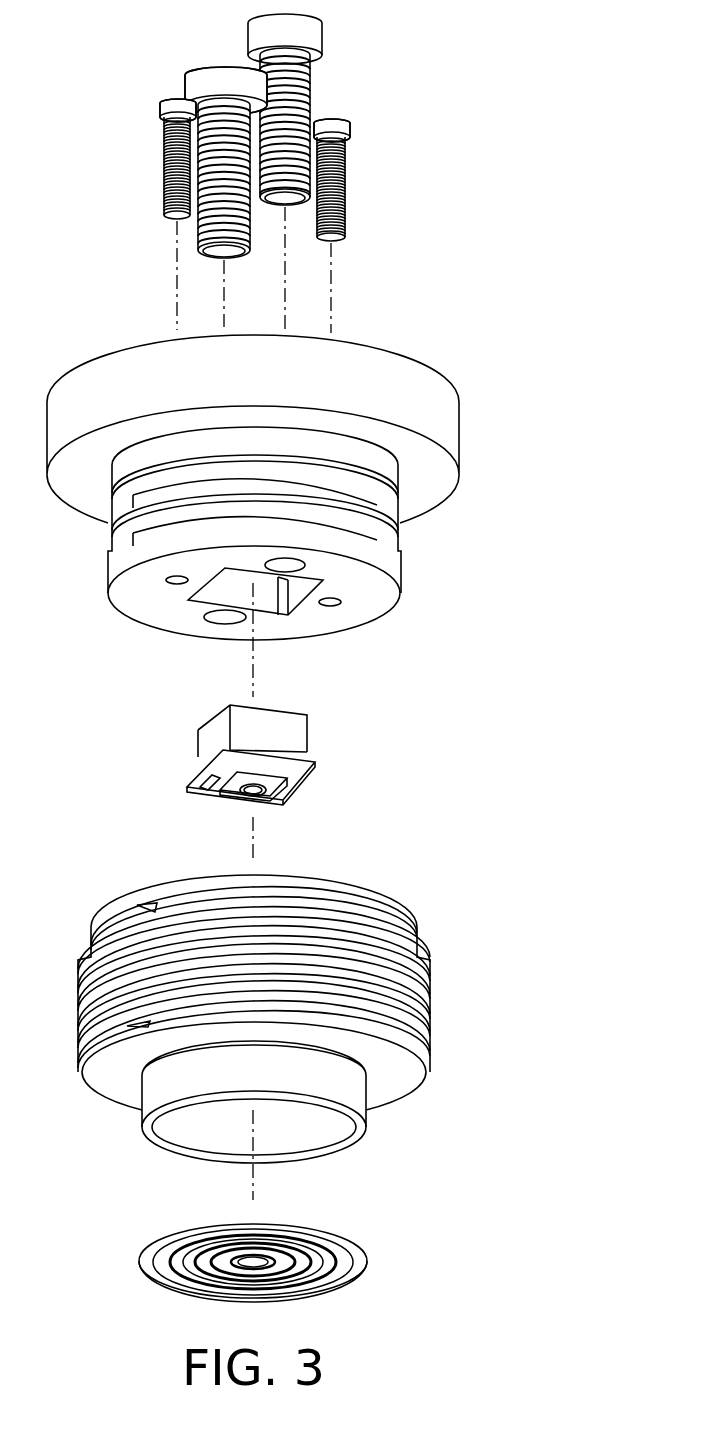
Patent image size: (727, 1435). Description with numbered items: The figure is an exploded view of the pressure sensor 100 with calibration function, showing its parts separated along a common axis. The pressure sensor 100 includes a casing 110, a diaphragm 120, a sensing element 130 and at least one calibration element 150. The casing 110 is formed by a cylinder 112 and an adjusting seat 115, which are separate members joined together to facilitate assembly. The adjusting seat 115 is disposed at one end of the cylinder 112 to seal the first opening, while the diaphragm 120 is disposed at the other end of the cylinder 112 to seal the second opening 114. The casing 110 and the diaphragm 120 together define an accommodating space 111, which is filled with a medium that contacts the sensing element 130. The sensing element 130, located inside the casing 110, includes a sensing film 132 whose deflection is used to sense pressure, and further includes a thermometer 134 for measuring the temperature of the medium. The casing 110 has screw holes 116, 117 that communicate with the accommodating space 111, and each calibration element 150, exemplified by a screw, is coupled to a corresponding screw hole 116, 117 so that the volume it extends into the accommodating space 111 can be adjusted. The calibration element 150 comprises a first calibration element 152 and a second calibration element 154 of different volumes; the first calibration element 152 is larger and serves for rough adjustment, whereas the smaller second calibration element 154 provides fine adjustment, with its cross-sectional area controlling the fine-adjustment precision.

The pressure sensor 100 is at (535, 1304).
The casing 110 is at (311, 516).
The accommodating space 111 is at (300, 1144).
The cylinder 112 is at (286, 1037).
The second opening 114 is at (316, 1128).
The adjusting seat 115 is at (453, 432).
The screw hole 116 is at (225, 618).
The screw hole 117 is at (330, 606).
The diaphragm 120 is at (368, 1263).
The sensing element 130 is at (271, 781).
The sensing film 132 is at (262, 795).
The thermometer 134 is at (208, 791).
The calibration element 150 is at (315, 173).
The first calibration element 152 is at (310, 73).
The second calibration element 154 is at (345, 170).